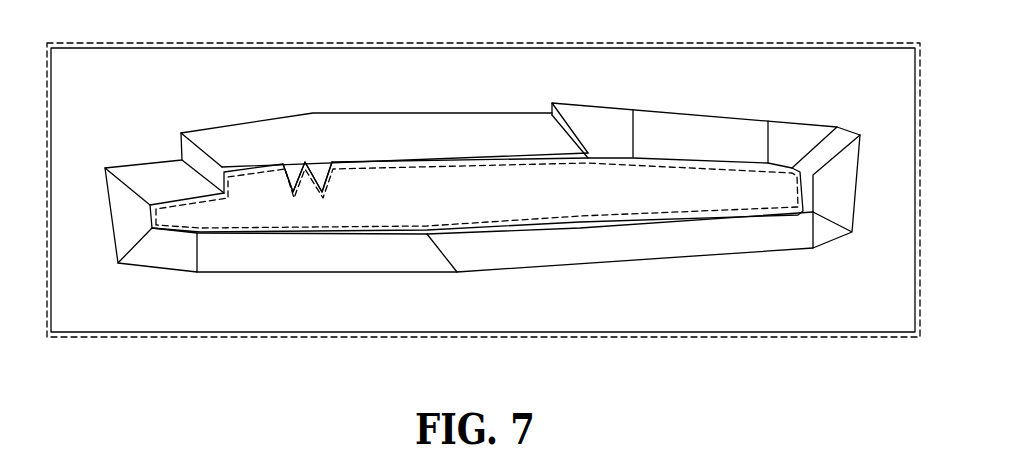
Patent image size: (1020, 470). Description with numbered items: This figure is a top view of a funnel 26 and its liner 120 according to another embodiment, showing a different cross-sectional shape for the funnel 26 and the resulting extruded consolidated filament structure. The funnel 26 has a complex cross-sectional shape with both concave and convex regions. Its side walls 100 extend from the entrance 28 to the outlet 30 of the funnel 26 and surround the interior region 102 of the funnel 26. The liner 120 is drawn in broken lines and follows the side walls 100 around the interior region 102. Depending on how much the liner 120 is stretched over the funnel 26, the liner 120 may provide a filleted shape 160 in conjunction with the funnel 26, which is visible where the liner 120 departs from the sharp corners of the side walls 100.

The funnel 26 is at (748, 288).
The entrance 28 is at (623, 262).
The outlet 30 is at (485, 157).
The side walls 100 is at (480, 248).
The interior region 102 is at (652, 184).
The liner 120 is at (405, 165).
The filleted shape 160 is at (273, 184).